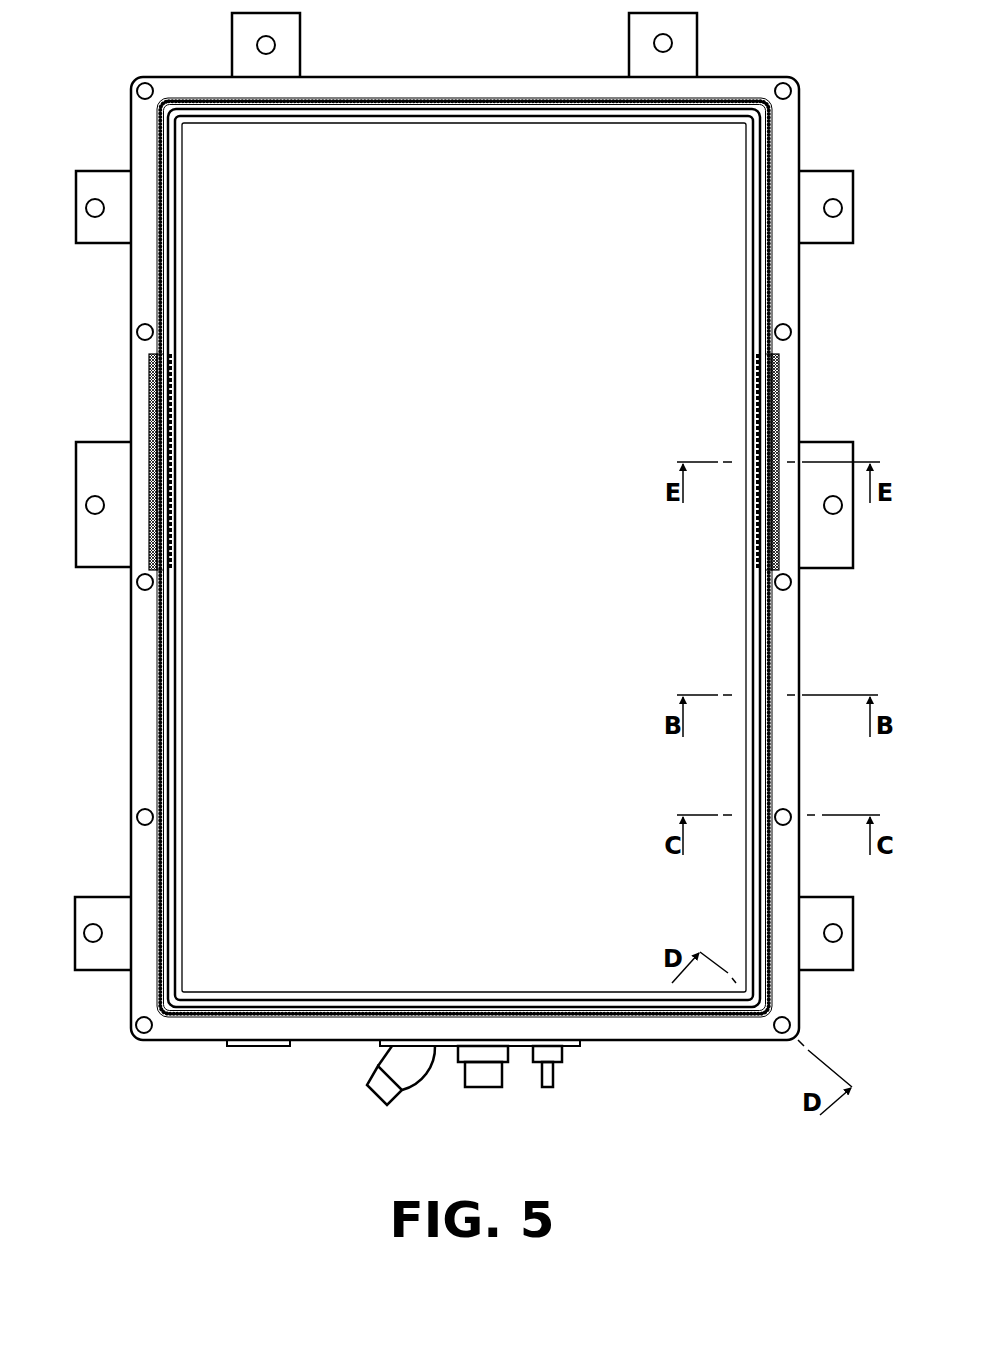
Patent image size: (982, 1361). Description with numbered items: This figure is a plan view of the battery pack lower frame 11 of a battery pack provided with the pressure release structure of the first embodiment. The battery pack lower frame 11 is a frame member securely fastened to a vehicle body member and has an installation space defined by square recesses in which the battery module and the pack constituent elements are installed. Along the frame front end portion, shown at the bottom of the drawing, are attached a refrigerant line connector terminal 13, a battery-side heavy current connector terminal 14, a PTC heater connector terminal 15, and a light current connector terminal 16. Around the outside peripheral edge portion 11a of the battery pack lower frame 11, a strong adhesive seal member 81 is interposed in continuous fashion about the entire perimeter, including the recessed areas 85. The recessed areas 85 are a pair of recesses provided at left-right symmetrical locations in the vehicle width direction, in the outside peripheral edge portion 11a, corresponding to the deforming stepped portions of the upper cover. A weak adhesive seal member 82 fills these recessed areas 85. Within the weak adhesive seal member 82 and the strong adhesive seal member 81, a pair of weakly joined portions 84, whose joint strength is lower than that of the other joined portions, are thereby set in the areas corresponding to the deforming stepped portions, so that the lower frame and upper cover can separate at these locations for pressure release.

The battery pack lower frame 11 is at (562, 71).
The outside peripheral edge portion 11a is at (495, 87).
The refrigerant line connector terminal 13 is at (256, 1047).
The battery-side heavy current connector terminal 14 is at (405, 1095).
The PTC heater connector terminal 15 is at (480, 1088).
The light current connector terminal 16 is at (553, 1075).
The strong adhesive seal member 81 is at (407, 99).
The weak adhesive seal member 82 is at (152, 397).
The weakly joined portions 84 is at (147, 424).
The recessed areas 85 is at (148, 535).